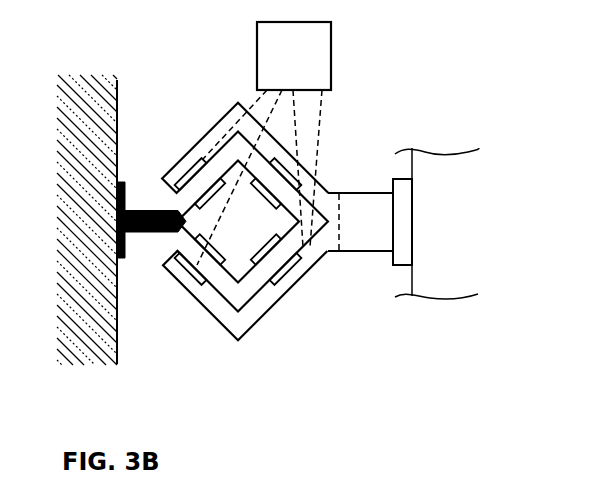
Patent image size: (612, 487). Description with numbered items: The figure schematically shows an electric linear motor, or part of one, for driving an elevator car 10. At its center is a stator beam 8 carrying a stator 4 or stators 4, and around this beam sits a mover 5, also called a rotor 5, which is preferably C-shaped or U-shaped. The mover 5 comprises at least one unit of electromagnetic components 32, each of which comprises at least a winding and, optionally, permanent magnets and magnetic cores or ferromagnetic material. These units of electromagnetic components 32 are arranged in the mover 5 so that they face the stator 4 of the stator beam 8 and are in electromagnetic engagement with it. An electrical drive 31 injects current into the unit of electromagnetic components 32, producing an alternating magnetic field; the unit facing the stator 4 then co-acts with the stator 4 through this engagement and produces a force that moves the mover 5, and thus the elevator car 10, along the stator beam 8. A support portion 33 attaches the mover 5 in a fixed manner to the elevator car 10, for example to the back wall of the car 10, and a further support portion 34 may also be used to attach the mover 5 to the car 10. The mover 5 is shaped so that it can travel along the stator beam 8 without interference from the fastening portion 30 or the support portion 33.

The stator 4 is at (260, 254).
The mover 5 is at (244, 224).
The stator beam 8 is at (230, 283).
The elevator car 10 is at (464, 240).
The fastening portion 30 is at (148, 211).
The electrical drive 31 is at (309, 68).
The unit of electromagnetic components 32 is at (193, 168).
The support portion 33 is at (370, 206).
The further support portion 34 is at (402, 202).